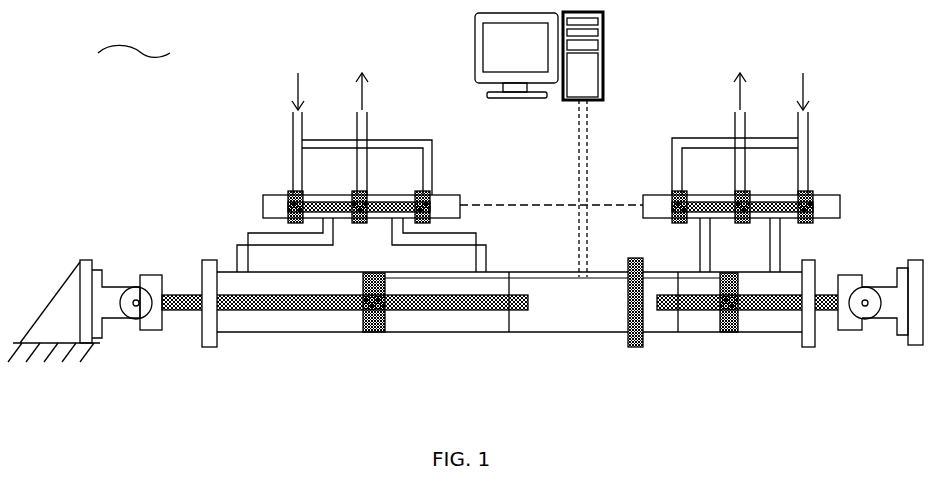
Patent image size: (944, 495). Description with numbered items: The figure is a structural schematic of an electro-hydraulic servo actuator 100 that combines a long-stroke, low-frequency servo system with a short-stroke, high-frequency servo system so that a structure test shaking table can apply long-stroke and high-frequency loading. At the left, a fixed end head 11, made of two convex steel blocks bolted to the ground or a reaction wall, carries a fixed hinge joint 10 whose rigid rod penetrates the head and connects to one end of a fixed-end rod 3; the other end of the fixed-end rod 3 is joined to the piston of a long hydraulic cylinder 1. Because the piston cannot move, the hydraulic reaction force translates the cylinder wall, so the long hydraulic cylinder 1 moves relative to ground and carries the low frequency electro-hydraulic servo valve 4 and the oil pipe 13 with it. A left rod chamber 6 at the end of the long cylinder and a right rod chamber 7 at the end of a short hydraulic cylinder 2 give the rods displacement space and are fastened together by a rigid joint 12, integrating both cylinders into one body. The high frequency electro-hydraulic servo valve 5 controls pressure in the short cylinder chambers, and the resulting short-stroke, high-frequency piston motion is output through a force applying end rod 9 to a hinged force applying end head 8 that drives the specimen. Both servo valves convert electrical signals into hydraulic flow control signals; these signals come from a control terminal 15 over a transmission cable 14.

The electro-hydraulic servo actuator 100 is at (134, 44).
The long hydraulic cylinder 1 is at (372, 332).
The short hydraulic cylinder 2 is at (737, 320).
The fixed-end rod 3 is at (318, 302).
The low frequency electro-hydraulic servo valve 4 is at (288, 205).
The high frequency electro-hydraulic servo valve 5 is at (827, 198).
The left rod chamber 6 is at (592, 307).
The right rod chamber 7 is at (660, 317).
The force applying end head 8 is at (917, 305).
The force applying end rod 9 is at (803, 322).
The fixed hinge joint 10 is at (148, 312).
The fixed end head 11 is at (115, 298).
The rigid joint 12 is at (635, 337).
The oil pipe 13 is at (298, 157).
The transmission cable 14 is at (532, 200).
The control terminal 15 is at (565, 88).